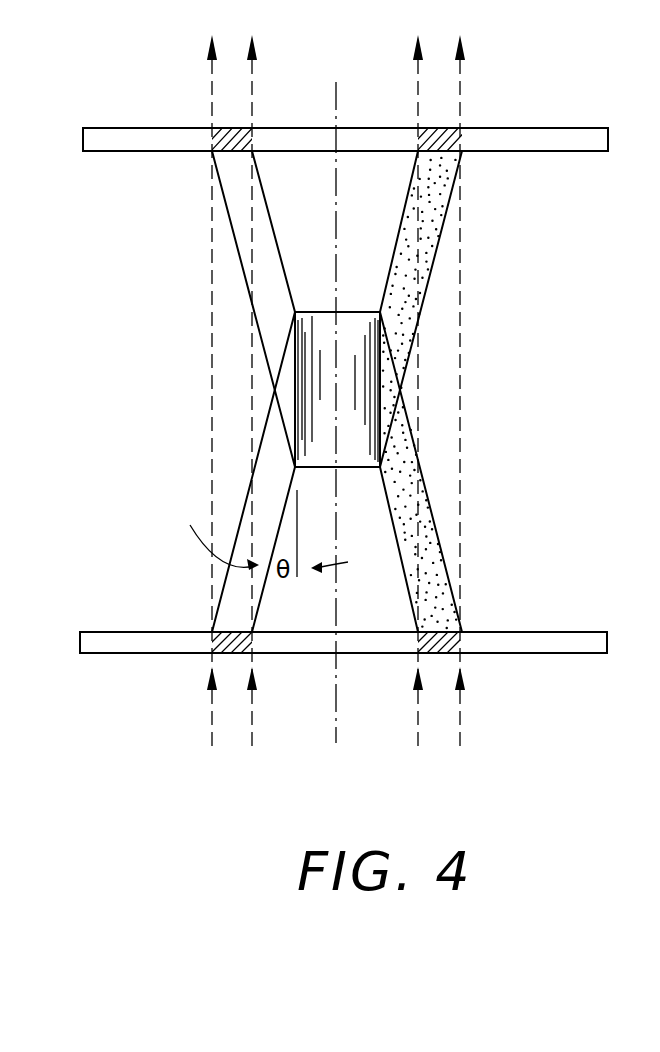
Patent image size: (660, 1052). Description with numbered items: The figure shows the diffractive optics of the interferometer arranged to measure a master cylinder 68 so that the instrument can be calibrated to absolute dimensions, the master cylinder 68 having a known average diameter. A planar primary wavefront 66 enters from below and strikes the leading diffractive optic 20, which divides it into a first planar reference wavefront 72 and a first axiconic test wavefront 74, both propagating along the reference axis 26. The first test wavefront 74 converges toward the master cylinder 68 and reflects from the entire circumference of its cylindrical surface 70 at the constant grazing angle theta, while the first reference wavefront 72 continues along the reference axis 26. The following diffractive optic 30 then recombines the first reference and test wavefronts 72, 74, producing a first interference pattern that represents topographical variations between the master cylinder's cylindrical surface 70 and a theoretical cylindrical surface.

The leading diffractive optic 20 is at (157, 624).
The reference axis 26 is at (338, 103).
The following diffractive optic 30 is at (105, 153).
The planar primary wavefront 66 is at (213, 735).
The master cylinder 68 is at (358, 300).
The cylindrical surface 70 is at (295, 377).
The first planar reference wavefront 72 is at (265, 435).
The first axiconic test wavefront 74 is at (278, 250).